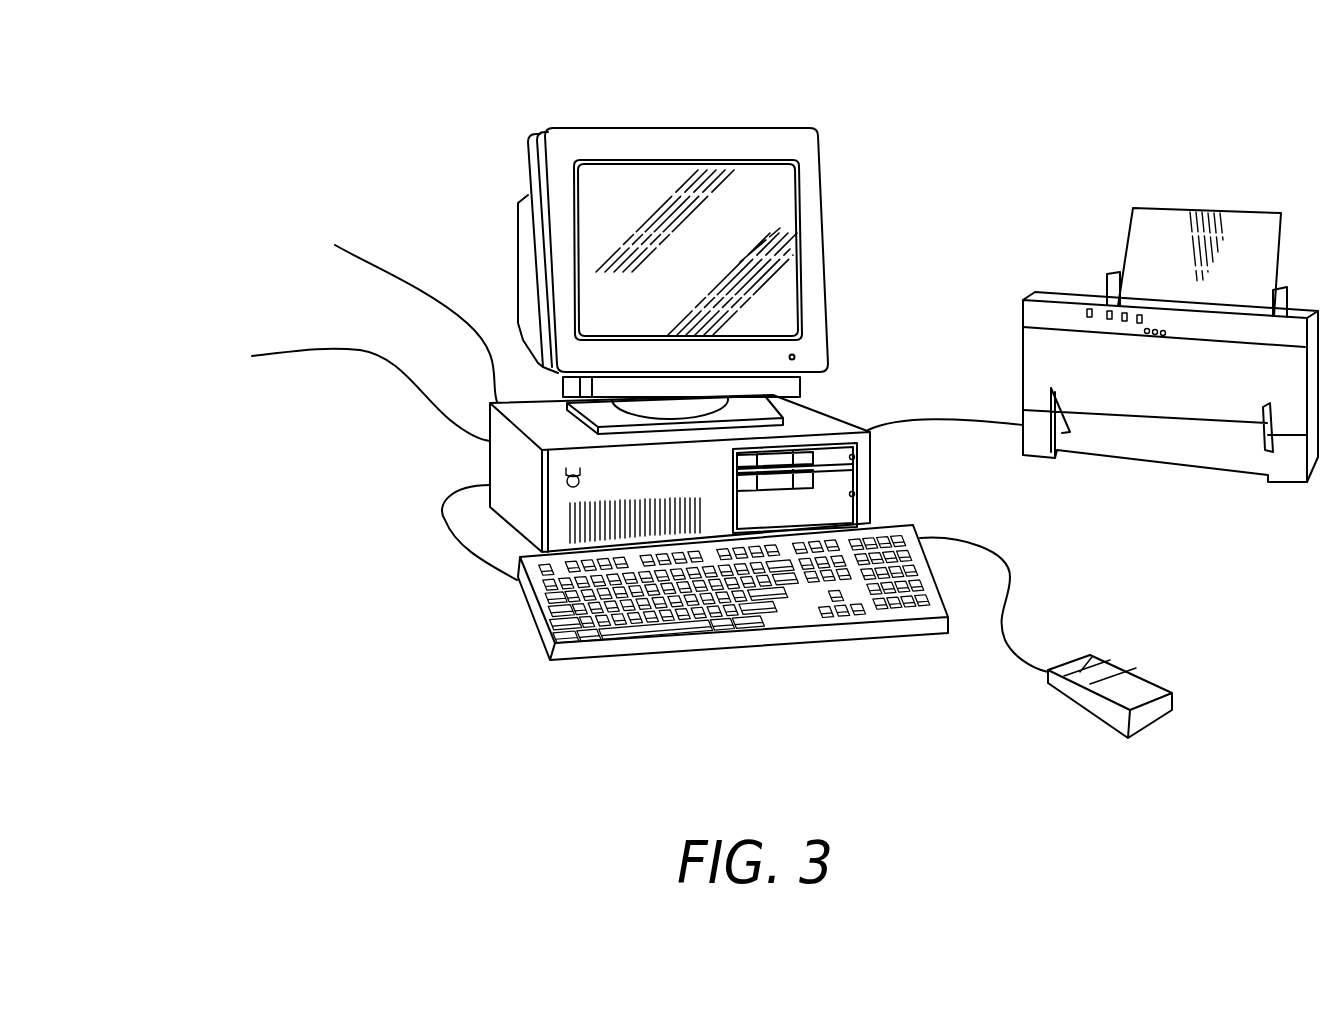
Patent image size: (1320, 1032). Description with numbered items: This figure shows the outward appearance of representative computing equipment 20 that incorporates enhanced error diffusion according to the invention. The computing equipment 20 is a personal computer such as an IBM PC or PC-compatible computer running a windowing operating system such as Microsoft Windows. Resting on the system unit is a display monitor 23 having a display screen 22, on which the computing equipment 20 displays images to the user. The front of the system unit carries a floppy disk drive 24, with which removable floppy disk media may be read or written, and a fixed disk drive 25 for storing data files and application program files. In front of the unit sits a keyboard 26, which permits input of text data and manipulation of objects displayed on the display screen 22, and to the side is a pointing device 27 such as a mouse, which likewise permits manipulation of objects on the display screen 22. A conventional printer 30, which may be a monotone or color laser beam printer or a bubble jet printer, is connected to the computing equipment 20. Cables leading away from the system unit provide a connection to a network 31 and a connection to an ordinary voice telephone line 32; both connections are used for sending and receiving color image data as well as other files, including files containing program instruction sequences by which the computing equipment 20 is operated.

The computing equipment 20 is at (923, 197).
The display screen 22 is at (777, 258).
The display monitor 23 is at (655, 128).
The floppy disk drive 24 is at (847, 475).
The fixed disk drive 25 is at (835, 507).
The keyboard 26 is at (628, 633).
The pointing device 27 is at (1140, 735).
The printer 30 is at (1068, 298).
The network 31 is at (407, 283).
The voice telephone line 32 is at (367, 357).